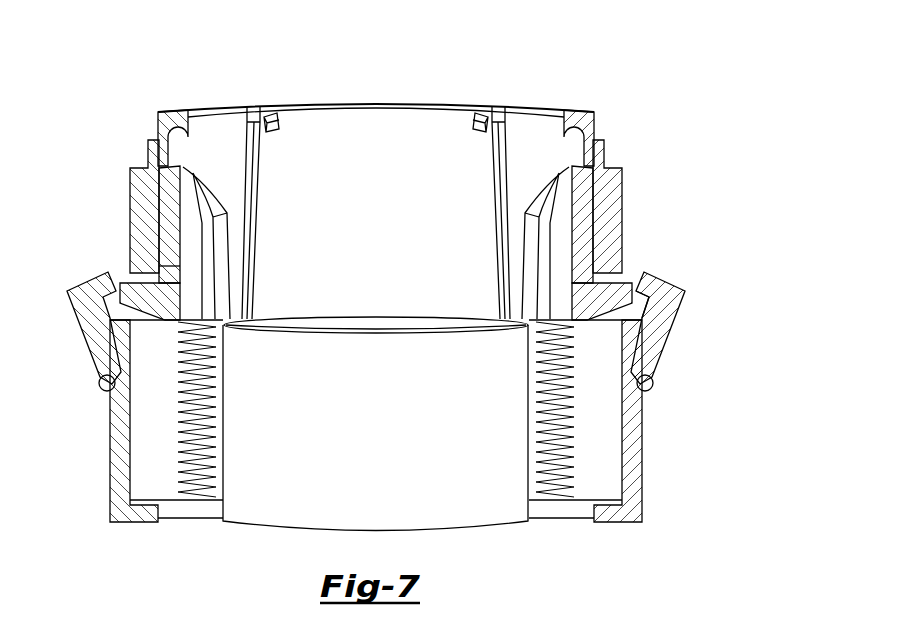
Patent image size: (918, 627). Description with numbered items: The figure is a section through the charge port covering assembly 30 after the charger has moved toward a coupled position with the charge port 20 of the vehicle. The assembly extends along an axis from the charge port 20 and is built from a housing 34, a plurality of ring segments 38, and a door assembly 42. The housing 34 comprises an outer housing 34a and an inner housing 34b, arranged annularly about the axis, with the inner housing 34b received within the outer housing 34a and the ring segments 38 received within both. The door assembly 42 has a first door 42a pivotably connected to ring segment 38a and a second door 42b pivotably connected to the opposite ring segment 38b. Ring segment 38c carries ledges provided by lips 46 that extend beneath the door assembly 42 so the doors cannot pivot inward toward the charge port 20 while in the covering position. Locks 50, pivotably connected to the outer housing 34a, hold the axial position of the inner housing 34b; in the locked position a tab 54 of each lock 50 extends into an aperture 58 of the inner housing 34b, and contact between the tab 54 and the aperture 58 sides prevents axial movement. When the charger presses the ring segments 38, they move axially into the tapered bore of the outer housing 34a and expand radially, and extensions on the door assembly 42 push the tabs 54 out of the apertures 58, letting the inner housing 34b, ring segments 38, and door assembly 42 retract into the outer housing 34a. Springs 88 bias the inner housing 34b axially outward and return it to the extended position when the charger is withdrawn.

The charge port covering assembly 30 is at (702, 65).
The charge port 20 is at (469, 508).
The housing 34 is at (608, 240).
The outer housing 34a is at (120, 452).
The inner housing 34b is at (138, 192).
The ring segments 38 is at (420, 105).
The ring segment 38a is at (598, 128).
The ring segment 38b is at (162, 127).
The ring segment 38c is at (316, 104).
The door assembly 42 is at (172, 228).
The first door 42a is at (583, 187).
The second door 42b is at (172, 272).
The lips 46 is at (277, 128).
The locks 50 is at (652, 356).
The tab 54 is at (634, 300).
The aperture 58 is at (600, 280).
The springs 88 is at (183, 410).